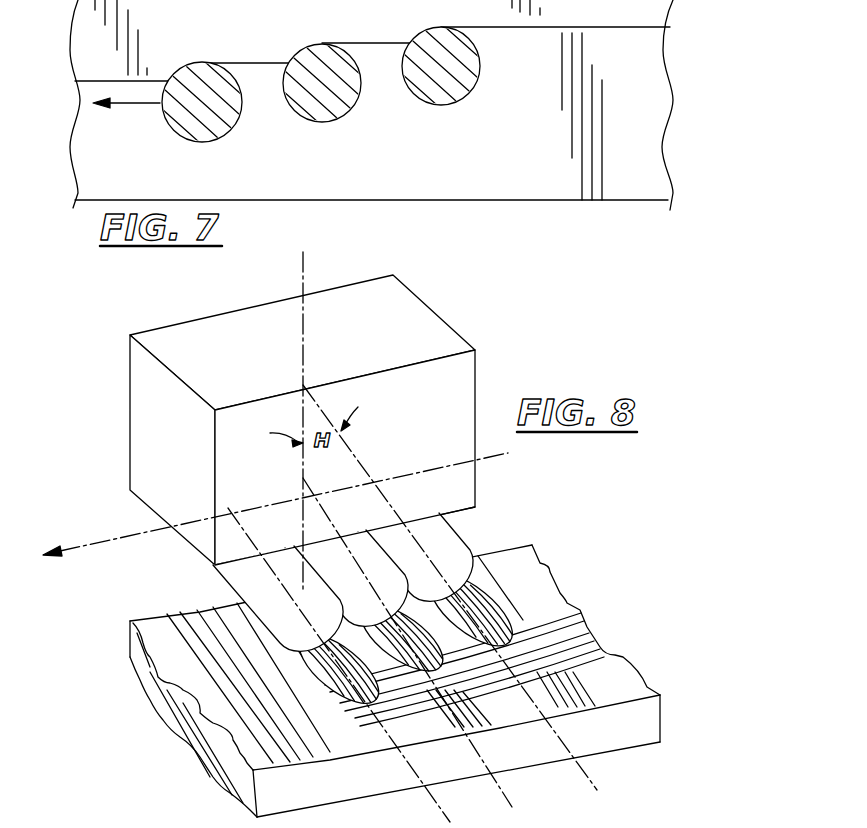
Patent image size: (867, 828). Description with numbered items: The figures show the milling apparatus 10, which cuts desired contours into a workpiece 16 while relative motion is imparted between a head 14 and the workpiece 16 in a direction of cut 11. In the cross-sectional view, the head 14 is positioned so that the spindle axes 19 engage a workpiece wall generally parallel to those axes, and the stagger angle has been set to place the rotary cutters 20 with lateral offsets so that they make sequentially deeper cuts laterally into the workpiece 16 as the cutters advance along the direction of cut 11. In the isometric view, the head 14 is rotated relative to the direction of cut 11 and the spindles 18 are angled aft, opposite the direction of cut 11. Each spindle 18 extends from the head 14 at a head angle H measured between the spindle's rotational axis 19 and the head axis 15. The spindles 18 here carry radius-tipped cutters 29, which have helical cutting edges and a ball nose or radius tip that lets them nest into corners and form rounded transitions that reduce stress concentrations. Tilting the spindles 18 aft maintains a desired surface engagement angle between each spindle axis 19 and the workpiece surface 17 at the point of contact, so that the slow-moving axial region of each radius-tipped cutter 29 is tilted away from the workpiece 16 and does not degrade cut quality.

In FIG. 8, the milling apparatus 10 is at (352, 444).
In FIG. 8, the direction of cut 11 is at (104, 543).
In FIG. 8, the head 14 is at (457, 373).
In FIG. 8, the head axis 15 is at (305, 262).
In FIG. 7, the workpiece 16 is at (652, 92).
In FIG. 8, the workpiece 16 is at (650, 722).
In FIG. 7, the workpiece surface 17 is at (647, 12).
In FIG. 8, the workpiece surface 17 is at (627, 677).
In FIG. 8, the spindles 18 is at (317, 600).
In FIG. 8, the spindle axes 19 is at (437, 802).
In FIG. 7, the rotary cutters 20 is at (199, 80).
In FIG. 8, the radius-tipped cutters 29 is at (463, 592).